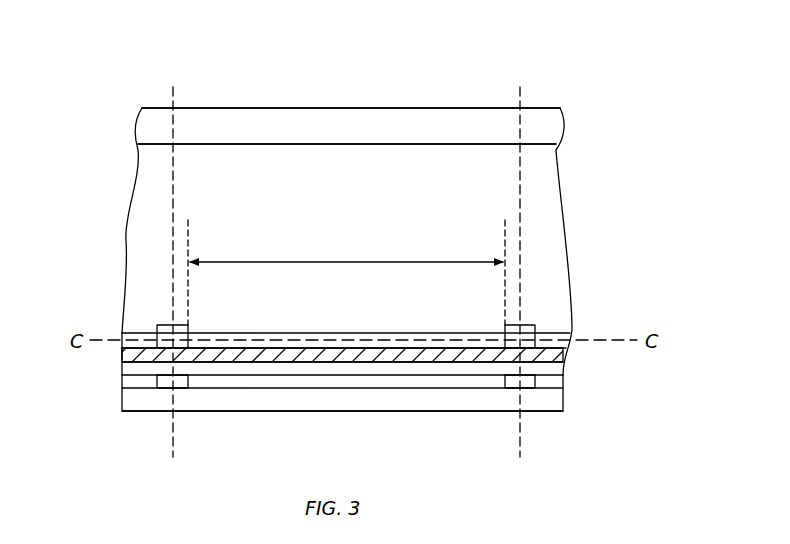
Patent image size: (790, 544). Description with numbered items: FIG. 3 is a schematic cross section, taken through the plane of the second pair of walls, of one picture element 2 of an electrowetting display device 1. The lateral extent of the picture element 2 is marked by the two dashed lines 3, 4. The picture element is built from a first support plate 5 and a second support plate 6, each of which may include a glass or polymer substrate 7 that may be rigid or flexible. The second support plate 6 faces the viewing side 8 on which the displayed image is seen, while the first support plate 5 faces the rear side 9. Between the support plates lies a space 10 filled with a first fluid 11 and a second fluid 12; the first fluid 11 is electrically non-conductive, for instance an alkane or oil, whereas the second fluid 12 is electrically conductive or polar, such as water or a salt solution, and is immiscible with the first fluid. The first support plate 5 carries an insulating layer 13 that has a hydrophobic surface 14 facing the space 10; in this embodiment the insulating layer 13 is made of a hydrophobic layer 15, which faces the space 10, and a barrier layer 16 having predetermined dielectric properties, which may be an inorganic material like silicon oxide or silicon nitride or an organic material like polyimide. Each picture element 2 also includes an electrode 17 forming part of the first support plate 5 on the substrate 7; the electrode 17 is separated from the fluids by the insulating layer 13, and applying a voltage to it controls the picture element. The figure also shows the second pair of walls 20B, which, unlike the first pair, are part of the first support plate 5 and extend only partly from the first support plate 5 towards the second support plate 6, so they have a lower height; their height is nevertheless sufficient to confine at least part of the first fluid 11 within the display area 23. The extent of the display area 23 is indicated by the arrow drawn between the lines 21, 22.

The electrowetting display device 1 is at (587, 103).
The picture element 2 is at (361, 103).
The dashed line 3 is at (173, 92).
The dashed line 4 is at (520, 92).
The first support plate 5 is at (613, 333).
The second support plate 6 is at (470, 118).
The substrate 7 is at (545, 403).
The viewing side 8 is at (262, 108).
The rear side 9 is at (312, 411).
The space 10 is at (424, 166).
The first fluid 11 is at (429, 338).
The second fluid 12 is at (306, 166).
The insulating layer 13 is at (575, 348).
The hydrophobic surface 14 is at (374, 348).
The hydrophobic layer 15 is at (319, 354).
The barrier layer 16 is at (265, 367).
The electrode 17 is at (407, 383).
The second pair of walls 20B is at (160, 325).
The line 21 is at (190, 222).
The line 22 is at (505, 222).
The display area 23 is at (346, 250).